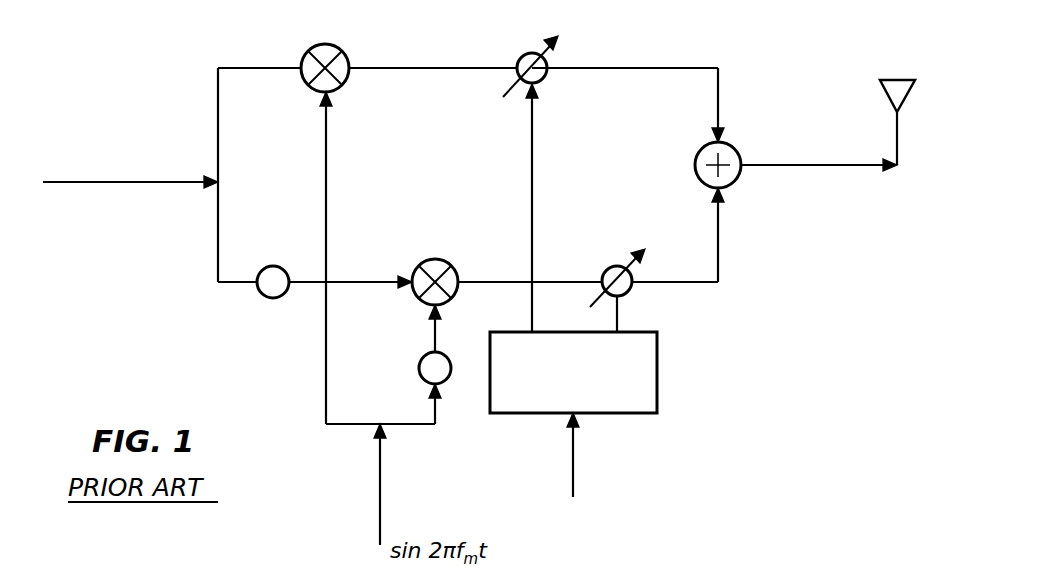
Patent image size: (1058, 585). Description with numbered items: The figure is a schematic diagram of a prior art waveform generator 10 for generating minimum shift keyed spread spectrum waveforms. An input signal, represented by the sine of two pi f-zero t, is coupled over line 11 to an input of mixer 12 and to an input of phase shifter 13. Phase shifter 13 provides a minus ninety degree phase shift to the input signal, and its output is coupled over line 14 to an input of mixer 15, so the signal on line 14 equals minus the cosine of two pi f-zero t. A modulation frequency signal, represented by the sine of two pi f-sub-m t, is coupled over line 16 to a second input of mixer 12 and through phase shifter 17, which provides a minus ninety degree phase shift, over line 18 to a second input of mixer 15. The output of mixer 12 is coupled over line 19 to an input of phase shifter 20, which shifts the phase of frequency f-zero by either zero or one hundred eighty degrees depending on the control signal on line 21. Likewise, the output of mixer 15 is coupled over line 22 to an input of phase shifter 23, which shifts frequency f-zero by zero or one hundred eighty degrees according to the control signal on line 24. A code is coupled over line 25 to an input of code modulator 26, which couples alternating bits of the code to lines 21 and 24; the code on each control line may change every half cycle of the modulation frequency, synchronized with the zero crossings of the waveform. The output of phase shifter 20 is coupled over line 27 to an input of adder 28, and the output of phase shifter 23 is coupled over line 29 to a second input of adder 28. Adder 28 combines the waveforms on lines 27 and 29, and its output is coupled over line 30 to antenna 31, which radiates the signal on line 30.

The waveform generator 10 is at (430, 14).
The line 11 is at (218, 102).
The mixer 12 is at (308, 48).
The phase shifter 13 is at (278, 298).
The line 14 is at (351, 280).
The mixer 15 is at (432, 260).
The line 16 is at (326, 182).
The phase shifter 17 is at (435, 407).
The line 18 is at (433, 336).
The line 19 is at (441, 68).
The phase shifter 20 is at (545, 76).
The line 21 is at (532, 183).
The line 22 is at (474, 280).
The phase shifter 23 is at (633, 290).
The line 24 is at (620, 313).
The line 25 is at (575, 470).
The code modulator 26 is at (657, 383).
The line 27 is at (718, 98).
The adder 28 is at (739, 150).
The line 29 is at (720, 260).
The line 30 is at (797, 167).
The antenna 31 is at (912, 93).